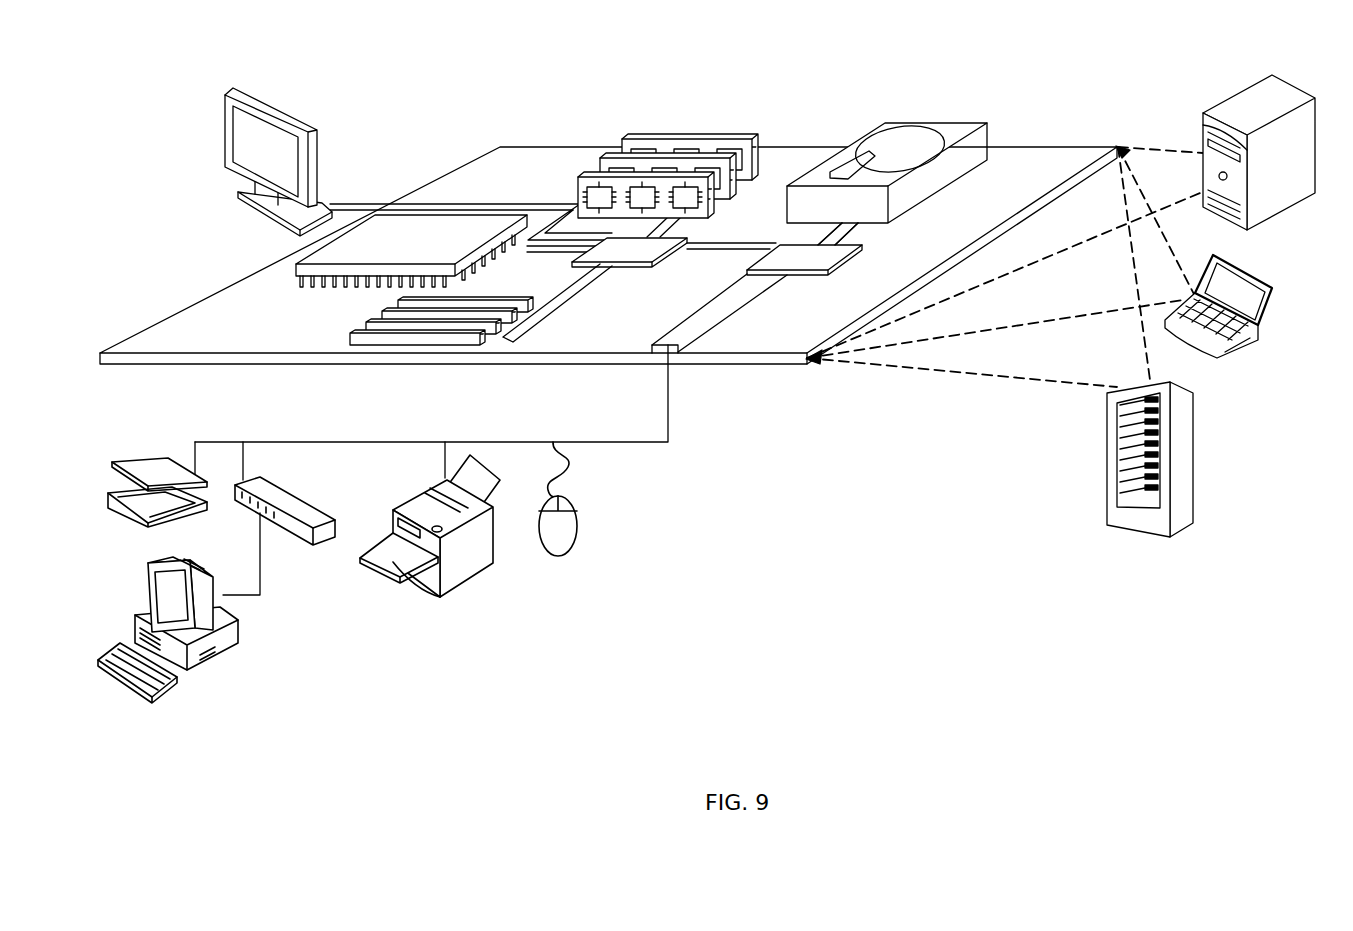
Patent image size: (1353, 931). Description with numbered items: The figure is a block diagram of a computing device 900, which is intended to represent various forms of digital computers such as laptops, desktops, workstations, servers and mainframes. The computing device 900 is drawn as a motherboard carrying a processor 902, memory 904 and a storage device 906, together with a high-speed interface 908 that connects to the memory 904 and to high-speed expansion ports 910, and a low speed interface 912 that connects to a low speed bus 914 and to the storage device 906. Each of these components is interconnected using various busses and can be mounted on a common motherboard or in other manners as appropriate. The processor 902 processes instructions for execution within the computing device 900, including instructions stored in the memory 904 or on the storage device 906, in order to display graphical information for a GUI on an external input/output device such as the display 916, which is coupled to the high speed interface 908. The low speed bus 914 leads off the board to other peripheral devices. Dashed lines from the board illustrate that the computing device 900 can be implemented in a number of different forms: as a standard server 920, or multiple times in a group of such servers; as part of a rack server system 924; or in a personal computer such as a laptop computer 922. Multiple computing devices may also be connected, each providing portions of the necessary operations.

The computing device 900 is at (430, 118).
The processor 902 is at (296, 266).
The memory 904 is at (646, 136).
The storage device 906 is at (880, 124).
The high-speed interface 908 is at (600, 258).
The high-speed expansion ports 910 is at (350, 337).
The low speed interface 912 is at (780, 250).
The low speed bus 914 is at (682, 357).
The display 916 is at (224, 88).
The standard server 920 is at (1203, 125).
The laptop computer 922 is at (1270, 278).
The rack server system 924 is at (1106, 485).